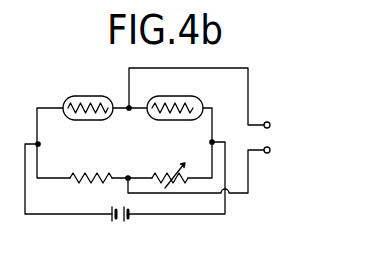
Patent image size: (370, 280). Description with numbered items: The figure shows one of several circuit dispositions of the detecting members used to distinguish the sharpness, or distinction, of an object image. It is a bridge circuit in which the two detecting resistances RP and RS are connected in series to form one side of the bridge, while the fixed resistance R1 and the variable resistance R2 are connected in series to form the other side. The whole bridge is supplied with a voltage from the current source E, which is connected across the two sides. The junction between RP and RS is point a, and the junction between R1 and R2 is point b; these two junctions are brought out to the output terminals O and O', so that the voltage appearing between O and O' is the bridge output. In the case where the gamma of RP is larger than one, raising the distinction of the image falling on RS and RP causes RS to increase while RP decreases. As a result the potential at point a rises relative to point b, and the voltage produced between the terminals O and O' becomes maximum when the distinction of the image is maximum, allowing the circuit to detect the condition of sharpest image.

The detecting member resistance RP is at (88, 93).
The detecting member resistance RS is at (175, 94).
The fixed resistance R1 is at (91, 162).
The variable resistance R2 is at (170, 163).
The point a is at (192, 97).
The point b is at (193, 171).
The current source E is at (126, 231).
The output terminal O is at (278, 125).
The output terminal O' is at (278, 147).